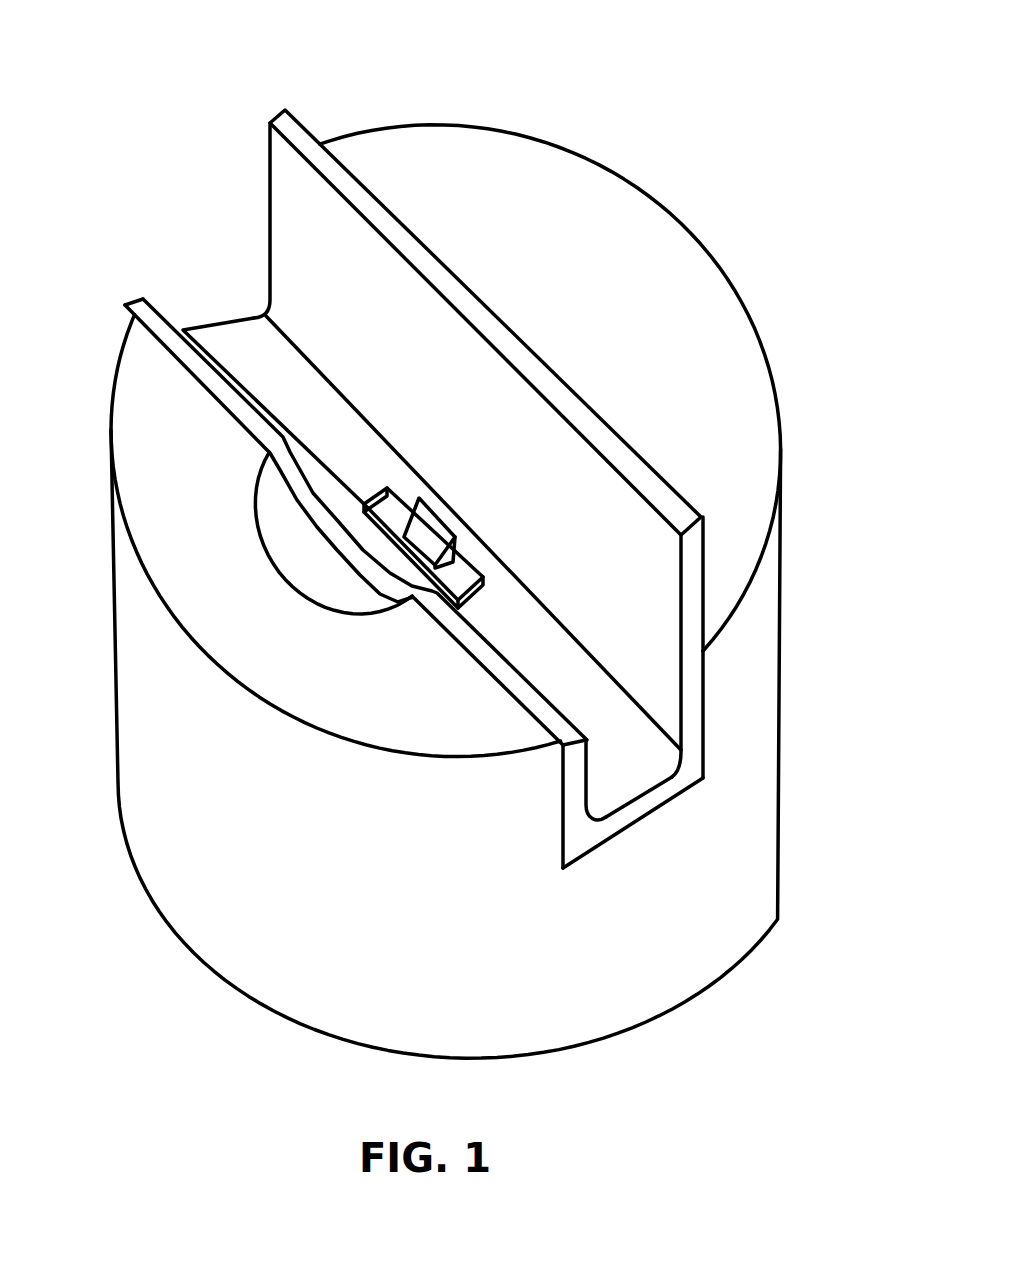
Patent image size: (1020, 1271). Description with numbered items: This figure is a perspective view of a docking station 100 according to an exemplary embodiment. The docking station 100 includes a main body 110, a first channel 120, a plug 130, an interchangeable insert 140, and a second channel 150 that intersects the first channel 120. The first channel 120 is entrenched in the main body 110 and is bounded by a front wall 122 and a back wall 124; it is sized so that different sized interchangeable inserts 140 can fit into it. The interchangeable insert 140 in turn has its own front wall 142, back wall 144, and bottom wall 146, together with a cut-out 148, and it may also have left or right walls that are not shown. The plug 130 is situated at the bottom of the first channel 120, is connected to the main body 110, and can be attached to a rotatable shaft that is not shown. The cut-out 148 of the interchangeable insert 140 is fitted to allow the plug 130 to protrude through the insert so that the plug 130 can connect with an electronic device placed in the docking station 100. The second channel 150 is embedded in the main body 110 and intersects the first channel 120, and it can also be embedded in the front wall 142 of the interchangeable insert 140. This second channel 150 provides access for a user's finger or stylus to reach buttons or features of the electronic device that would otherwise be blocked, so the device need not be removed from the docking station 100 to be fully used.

The docking station 100 is at (568, 126).
The main body 110 is at (144, 691).
The first channel 120 is at (635, 822).
The front wall 122 is at (558, 818).
The back wall 124 is at (703, 700).
The plug 130 is at (428, 543).
The interchangeable insert 140 is at (282, 357).
The front wall 142 is at (143, 312).
The back wall 144 is at (307, 145).
The bottom wall 146 is at (627, 755).
The cut-out 148 is at (388, 510).
The second channel 150 is at (300, 534).